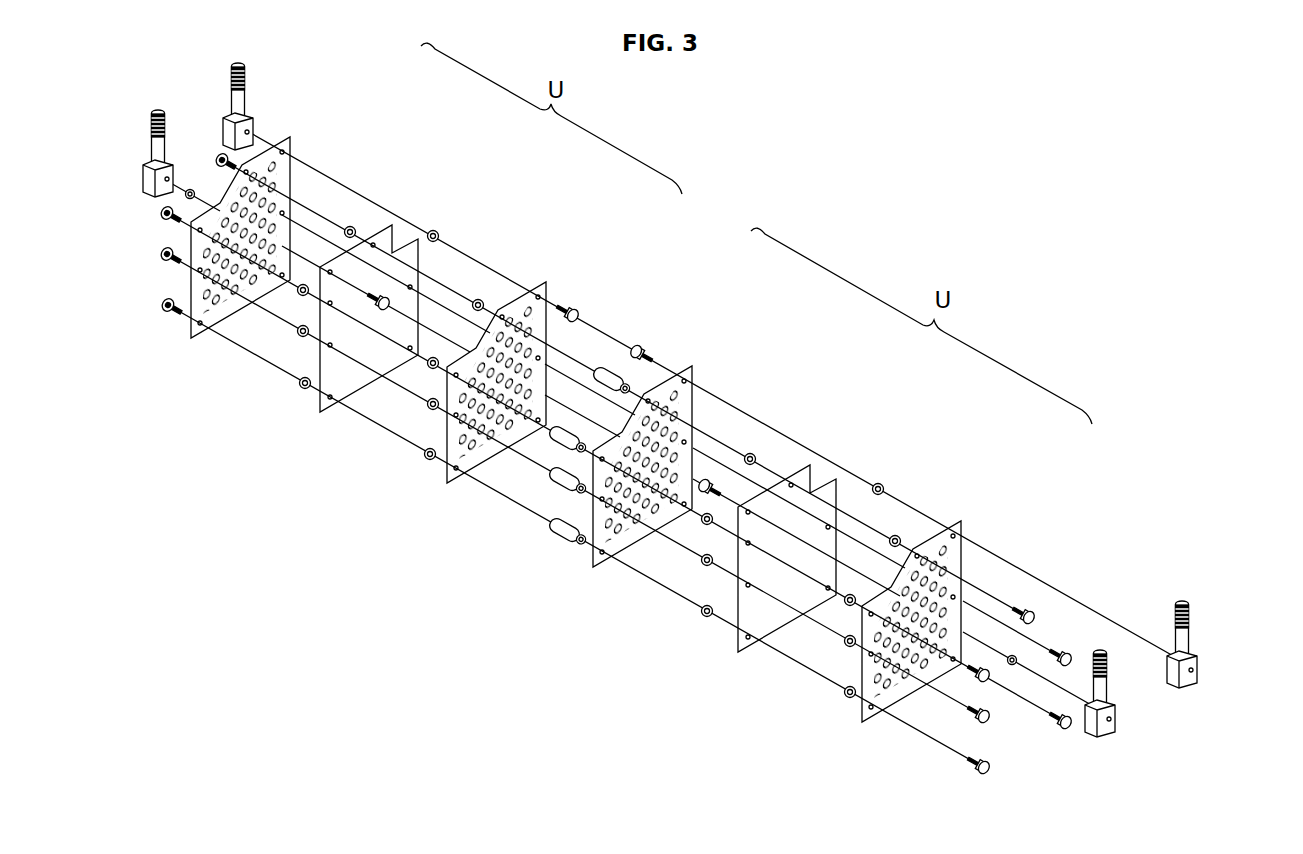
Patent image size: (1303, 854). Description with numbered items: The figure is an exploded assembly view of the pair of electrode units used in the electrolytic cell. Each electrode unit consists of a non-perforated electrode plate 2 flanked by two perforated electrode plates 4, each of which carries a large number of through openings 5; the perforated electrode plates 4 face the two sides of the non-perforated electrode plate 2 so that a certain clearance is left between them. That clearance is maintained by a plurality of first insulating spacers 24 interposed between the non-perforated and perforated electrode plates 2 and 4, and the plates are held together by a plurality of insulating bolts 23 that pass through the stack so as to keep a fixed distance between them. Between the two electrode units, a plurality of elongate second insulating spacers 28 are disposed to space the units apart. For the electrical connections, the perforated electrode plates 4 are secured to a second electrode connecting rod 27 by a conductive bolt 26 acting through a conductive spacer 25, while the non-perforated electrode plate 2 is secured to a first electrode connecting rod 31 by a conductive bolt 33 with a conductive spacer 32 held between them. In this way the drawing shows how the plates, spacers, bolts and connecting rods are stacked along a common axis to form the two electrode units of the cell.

The non-perforated electrode plate 2 is at (395, 237).
The perforated electrode plate 4 is at (292, 150).
The through openings 5 is at (277, 167).
The insulating bolts 23 is at (162, 310).
The first insulating spacers 24 is at (301, 387).
The conductive spacer 25 is at (438, 237).
The conductive bolt 26 is at (575, 308).
The second electrode connecting rod 27 is at (247, 92).
The elongate second insulating spacers 28 is at (560, 542).
The first electrode connecting rod 31 is at (148, 147).
The conductive spacer 32 is at (191, 188).
The conductive bolt 33 is at (379, 309).